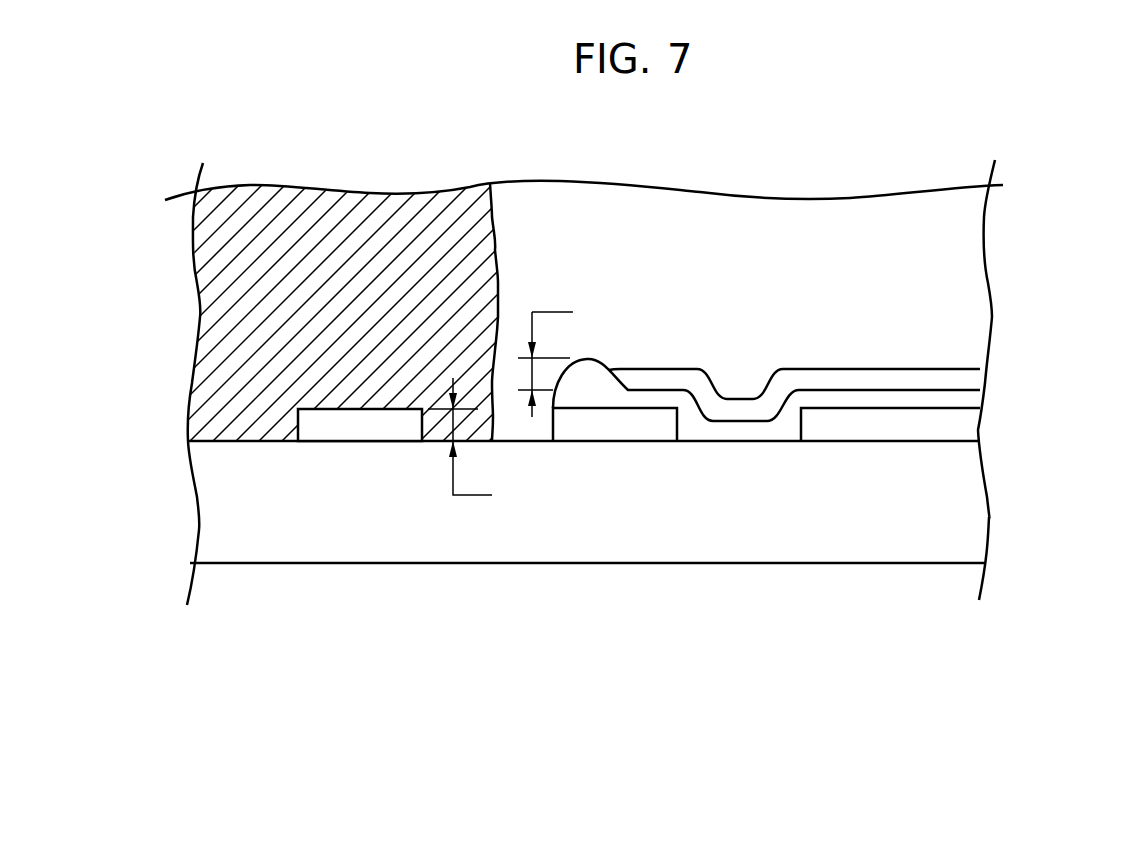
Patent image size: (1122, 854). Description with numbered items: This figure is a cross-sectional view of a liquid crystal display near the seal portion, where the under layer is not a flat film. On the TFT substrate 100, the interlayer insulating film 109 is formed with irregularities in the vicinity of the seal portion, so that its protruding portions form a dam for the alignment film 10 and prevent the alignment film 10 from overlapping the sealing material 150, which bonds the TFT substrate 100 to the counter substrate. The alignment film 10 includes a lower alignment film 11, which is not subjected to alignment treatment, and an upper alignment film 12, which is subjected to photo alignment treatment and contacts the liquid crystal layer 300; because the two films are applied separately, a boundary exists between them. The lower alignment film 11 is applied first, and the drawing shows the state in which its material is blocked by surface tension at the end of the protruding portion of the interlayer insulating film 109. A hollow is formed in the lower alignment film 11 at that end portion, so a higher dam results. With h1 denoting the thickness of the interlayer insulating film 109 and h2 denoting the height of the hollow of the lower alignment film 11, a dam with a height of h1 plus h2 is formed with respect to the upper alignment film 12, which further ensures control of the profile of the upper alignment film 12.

The liquid crystal layer 300 is at (980, 257).
The TFT substrate 100 is at (983, 517).
The sealing material 150 is at (228, 312).
The interlayer insulating film 109 is at (358, 432).
The alignment film 10 is at (822, 385).
The lower alignment film 11 is at (975, 379).
The upper alignment film 12 is at (975, 397).
The thickness of the interlayer insulating film h1 is at (462, 436).
The height of the hollow of the lower alignment film h2 is at (545, 348).